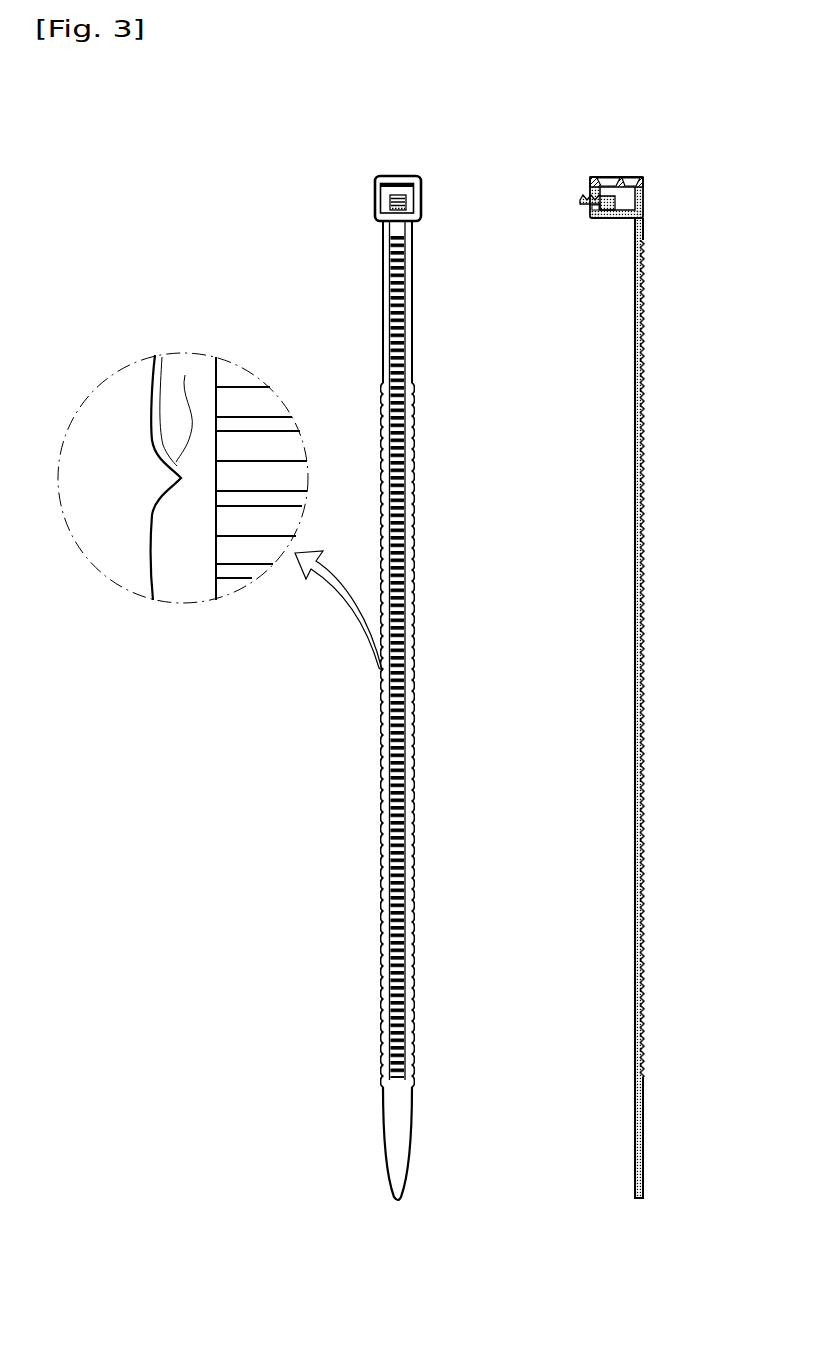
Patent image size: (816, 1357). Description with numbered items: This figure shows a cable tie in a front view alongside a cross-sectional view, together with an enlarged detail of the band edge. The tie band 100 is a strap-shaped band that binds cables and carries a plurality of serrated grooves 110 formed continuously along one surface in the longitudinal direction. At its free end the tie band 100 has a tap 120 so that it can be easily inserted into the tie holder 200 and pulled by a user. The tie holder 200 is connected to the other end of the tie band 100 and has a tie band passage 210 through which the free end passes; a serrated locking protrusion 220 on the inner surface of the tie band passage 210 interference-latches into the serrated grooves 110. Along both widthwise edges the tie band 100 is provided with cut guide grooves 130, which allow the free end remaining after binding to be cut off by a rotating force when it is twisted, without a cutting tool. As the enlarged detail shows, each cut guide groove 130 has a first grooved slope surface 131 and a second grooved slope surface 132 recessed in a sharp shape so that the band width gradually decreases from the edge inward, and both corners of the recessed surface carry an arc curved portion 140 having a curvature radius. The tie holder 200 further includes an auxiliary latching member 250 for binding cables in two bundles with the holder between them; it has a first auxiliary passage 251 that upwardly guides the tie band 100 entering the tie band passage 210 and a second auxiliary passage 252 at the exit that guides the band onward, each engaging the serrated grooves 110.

The tie band 100 is at (634, 277).
The serrated grooves 110 is at (412, 441).
The tap 120 is at (634, 1118).
The cut guide grooves 130 is at (382, 680).
The first grooved slope surface 131 is at (155, 357).
The second grooved slope surface 132 is at (185, 375).
The arc curved portion 140 is at (150, 447).
The tie holder 200 is at (375, 184).
The tie band passage 210 is at (633, 196).
The serrated locking protrusion 220 is at (581, 199).
The auxiliary latching member 250 is at (642, 112).
The first auxiliary passage 251 is at (633, 176).
The second auxiliary passage 252 is at (605, 176).